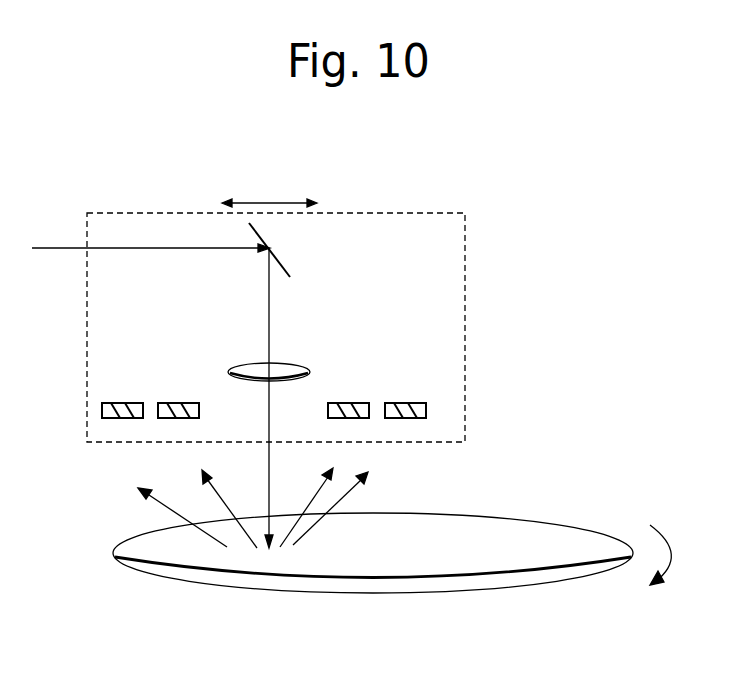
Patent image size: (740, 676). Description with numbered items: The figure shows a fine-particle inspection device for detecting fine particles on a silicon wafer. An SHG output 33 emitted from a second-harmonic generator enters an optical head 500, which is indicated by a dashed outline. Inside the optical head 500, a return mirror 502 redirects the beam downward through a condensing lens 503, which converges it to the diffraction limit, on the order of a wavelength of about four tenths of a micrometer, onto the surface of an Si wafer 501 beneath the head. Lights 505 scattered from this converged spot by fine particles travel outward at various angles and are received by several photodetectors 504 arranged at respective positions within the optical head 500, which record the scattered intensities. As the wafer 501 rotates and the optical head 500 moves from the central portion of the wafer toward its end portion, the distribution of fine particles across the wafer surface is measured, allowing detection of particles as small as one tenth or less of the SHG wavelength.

The SHG output 33 is at (53, 249).
The optical head 500 is at (433, 228).
The Si wafer 501 is at (402, 582).
The return mirror 502 is at (280, 260).
The condensing lens 503 is at (285, 362).
The photodetectors 504 is at (118, 402).
The scattered lights 505 is at (345, 497).